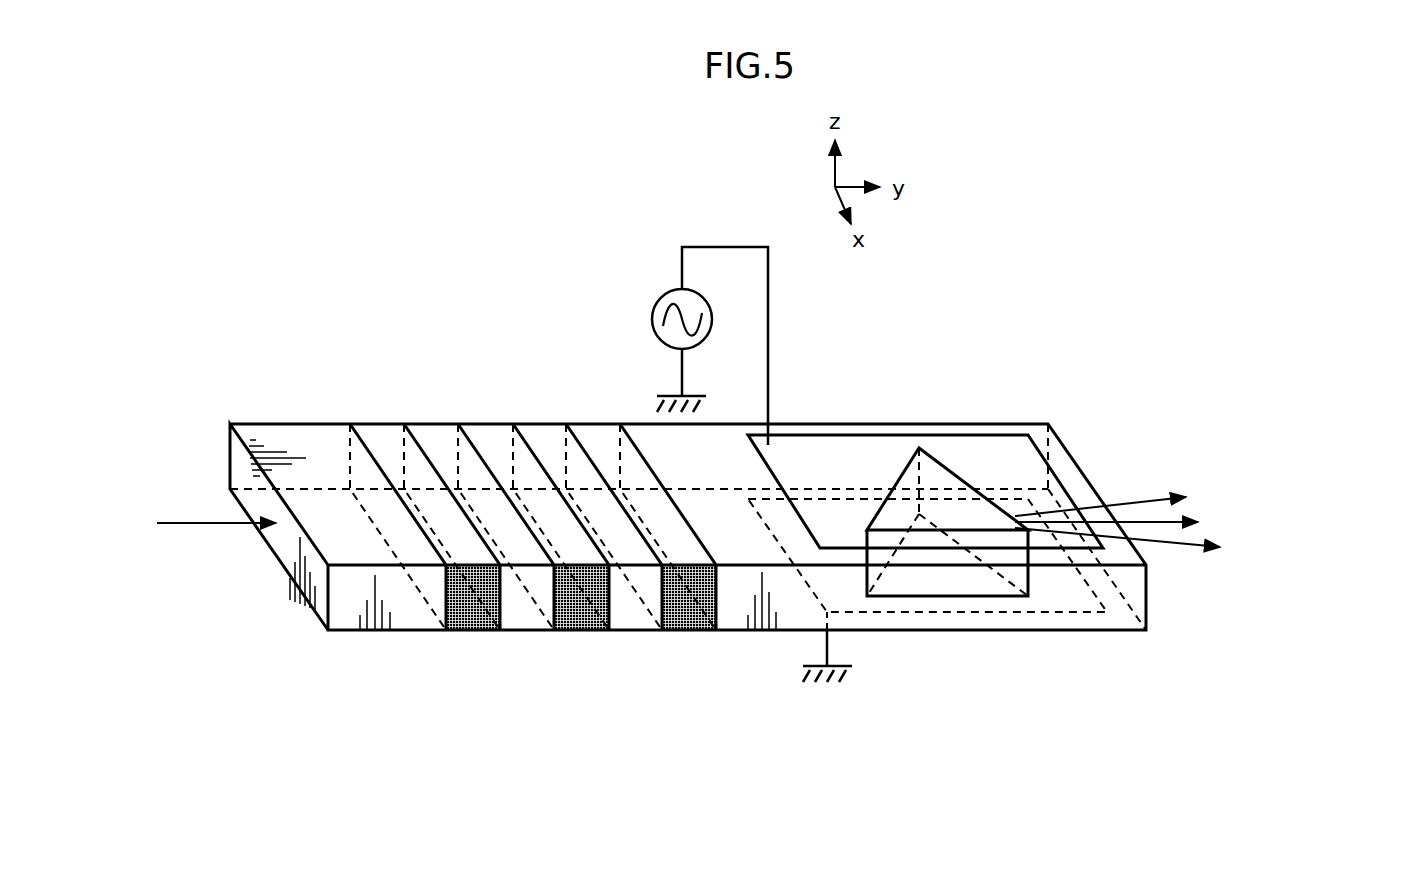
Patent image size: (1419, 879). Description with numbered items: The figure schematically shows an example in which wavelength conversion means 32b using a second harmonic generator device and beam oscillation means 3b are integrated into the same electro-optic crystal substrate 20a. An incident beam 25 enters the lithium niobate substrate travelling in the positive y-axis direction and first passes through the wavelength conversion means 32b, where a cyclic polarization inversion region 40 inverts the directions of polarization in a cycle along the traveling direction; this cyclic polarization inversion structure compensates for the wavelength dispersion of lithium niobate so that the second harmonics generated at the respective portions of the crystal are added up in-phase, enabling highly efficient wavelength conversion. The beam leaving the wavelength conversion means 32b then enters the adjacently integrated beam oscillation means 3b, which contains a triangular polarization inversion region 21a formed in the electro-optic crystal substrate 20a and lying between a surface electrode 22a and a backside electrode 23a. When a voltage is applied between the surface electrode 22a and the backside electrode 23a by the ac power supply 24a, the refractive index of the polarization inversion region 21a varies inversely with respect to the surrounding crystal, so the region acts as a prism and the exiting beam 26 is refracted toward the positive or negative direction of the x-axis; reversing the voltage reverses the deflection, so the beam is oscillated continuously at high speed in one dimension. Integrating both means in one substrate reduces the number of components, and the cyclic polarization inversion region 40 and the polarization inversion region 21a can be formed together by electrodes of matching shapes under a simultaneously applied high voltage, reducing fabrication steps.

The electro-optic crystal substrate 20a is at (1117, 615).
The wavelength conversion means 32b is at (618, 408).
The cyclic polarization inversion region 40 is at (686, 640).
The incident beam 25 is at (210, 521).
The ac power supply 24a is at (657, 302).
The beam oscillation means 3b is at (1023, 408).
The surface electrode 22a is at (1033, 462).
The backside electrode 23a is at (910, 612).
The polarization inversion region 21a is at (943, 487).
The exiting beam 26 is at (1152, 515).